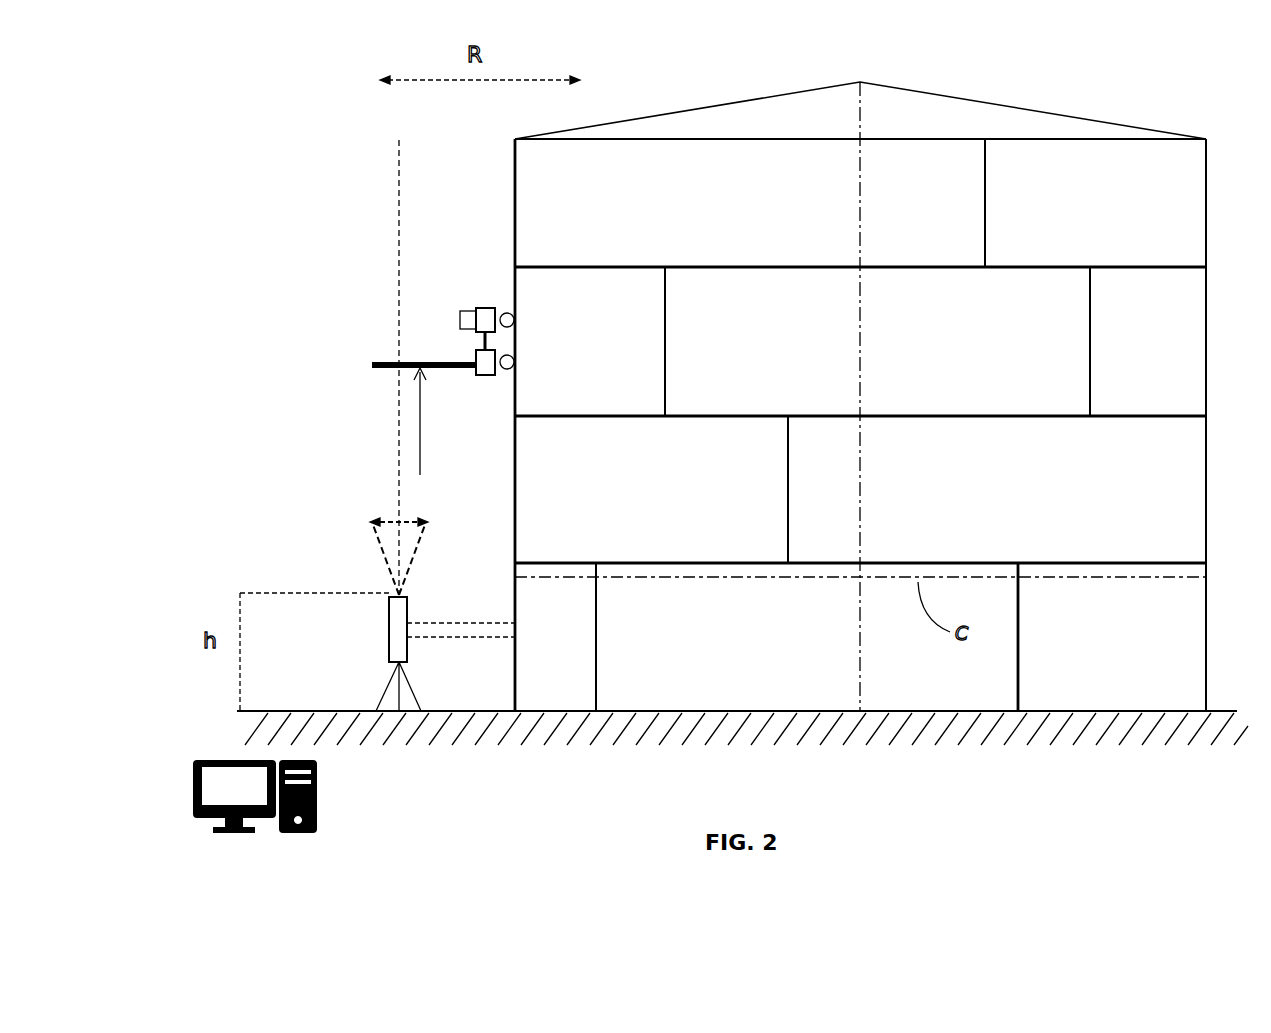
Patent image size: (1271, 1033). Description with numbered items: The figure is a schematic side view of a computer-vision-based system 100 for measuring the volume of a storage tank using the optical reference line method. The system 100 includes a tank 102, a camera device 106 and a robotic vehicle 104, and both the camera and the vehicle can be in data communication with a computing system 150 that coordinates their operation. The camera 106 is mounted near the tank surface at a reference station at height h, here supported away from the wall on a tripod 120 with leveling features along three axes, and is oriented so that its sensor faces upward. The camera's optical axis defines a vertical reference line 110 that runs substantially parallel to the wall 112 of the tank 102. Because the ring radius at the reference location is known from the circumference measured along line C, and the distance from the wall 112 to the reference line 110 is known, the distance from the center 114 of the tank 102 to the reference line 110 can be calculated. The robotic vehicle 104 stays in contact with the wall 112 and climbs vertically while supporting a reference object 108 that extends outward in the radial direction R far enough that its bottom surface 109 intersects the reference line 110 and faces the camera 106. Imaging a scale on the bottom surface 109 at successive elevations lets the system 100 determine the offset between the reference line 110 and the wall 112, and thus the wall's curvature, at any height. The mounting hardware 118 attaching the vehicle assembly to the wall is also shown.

The computer-vision-based system 100 is at (335, 115).
The tank 102 is at (1037, 110).
The robotic vehicle 104 is at (448, 296).
The camera device 106 is at (388, 614).
The reference object 108 is at (424, 360).
The bottom surface 109 is at (429, 439).
The reference line 110 is at (397, 500).
The wall 112 is at (514, 206).
The center 114 is at (862, 368).
The mounting clamp 118 is at (515, 330).
The tripod 120 is at (410, 686).
The computing system 150 is at (320, 792).